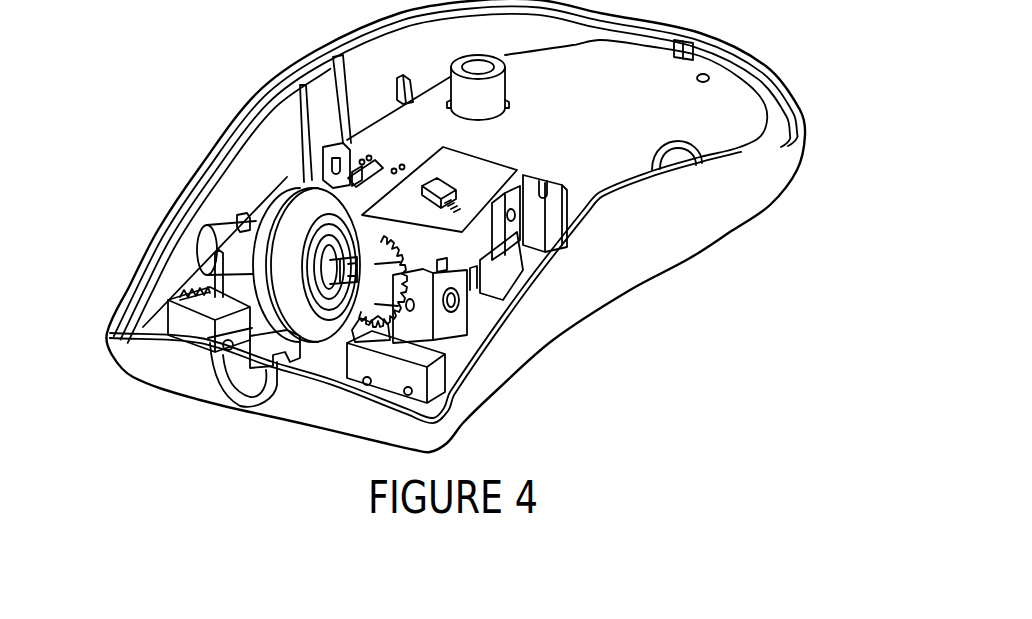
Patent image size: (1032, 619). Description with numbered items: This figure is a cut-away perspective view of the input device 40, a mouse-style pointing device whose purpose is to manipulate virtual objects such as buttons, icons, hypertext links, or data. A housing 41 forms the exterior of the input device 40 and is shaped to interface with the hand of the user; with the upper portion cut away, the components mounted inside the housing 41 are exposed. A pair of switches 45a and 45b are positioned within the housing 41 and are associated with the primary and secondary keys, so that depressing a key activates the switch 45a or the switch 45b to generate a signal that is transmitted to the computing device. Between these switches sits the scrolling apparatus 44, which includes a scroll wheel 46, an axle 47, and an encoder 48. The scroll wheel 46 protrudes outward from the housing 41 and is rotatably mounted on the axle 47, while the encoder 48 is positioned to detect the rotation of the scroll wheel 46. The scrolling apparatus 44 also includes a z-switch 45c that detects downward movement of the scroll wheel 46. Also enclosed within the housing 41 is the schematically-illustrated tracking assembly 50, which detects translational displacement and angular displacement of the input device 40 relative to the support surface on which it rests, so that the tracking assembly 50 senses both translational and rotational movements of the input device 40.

The input device 40 is at (93, 305).
The housing 41 is at (688, 242).
The scrolling apparatus 44 is at (282, 190).
The switch 45a is at (403, 348).
The switch 45b is at (223, 305).
The z-switch 45c is at (233, 337).
The scroll wheel 46 is at (327, 200).
The axle 47 is at (463, 302).
The encoder 48 is at (342, 272).
The tracking assembly 50 is at (508, 153).